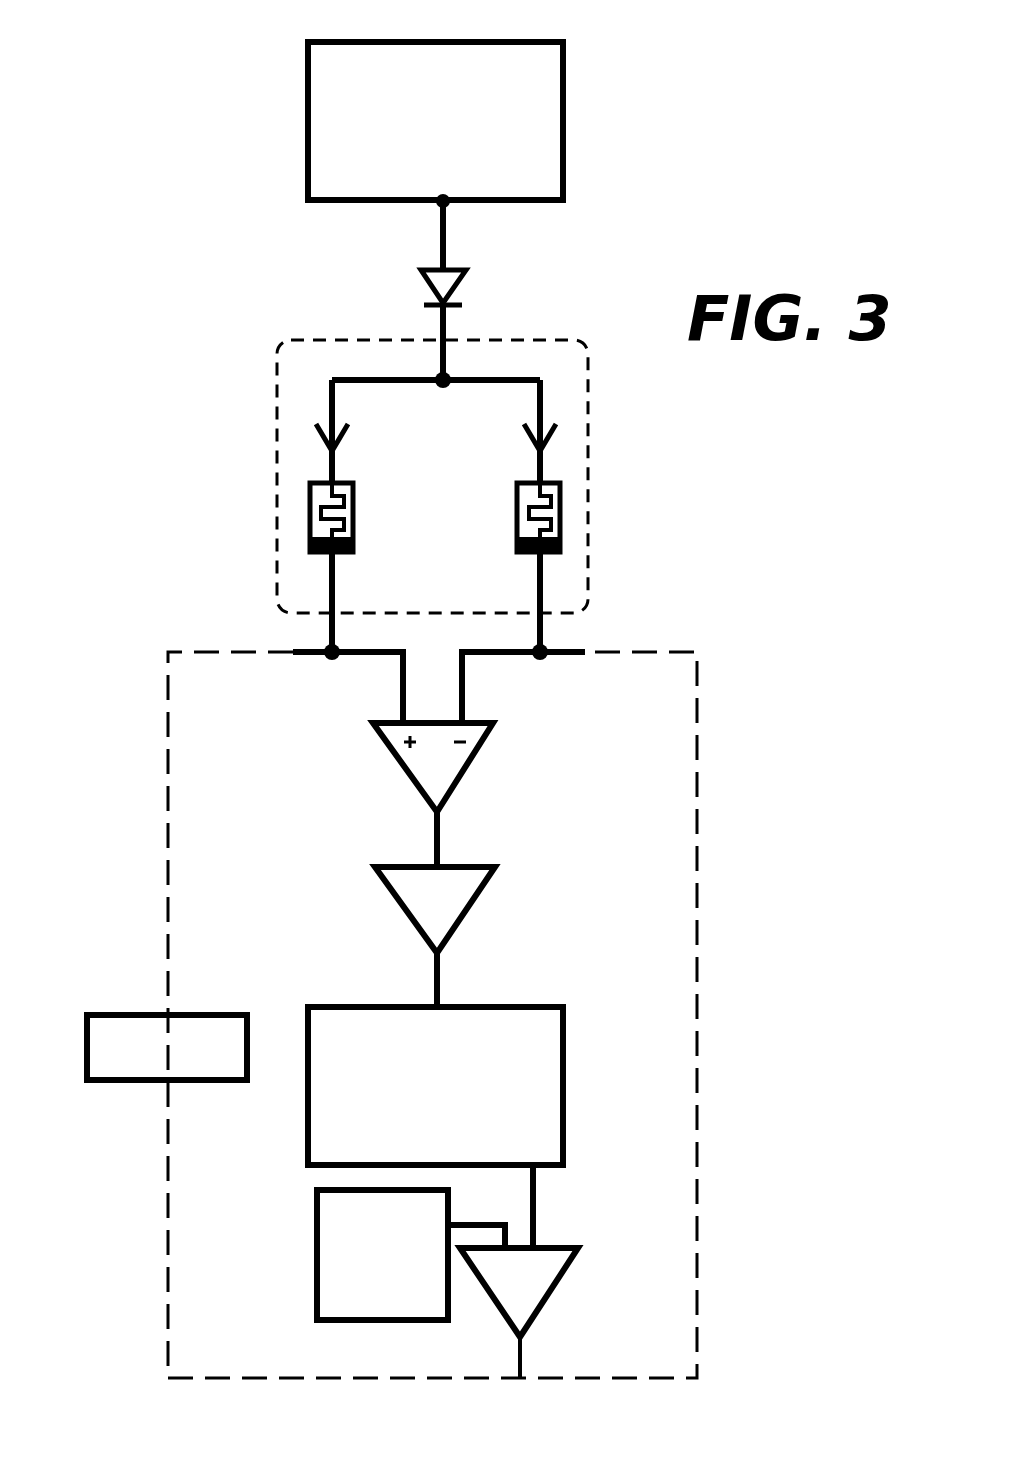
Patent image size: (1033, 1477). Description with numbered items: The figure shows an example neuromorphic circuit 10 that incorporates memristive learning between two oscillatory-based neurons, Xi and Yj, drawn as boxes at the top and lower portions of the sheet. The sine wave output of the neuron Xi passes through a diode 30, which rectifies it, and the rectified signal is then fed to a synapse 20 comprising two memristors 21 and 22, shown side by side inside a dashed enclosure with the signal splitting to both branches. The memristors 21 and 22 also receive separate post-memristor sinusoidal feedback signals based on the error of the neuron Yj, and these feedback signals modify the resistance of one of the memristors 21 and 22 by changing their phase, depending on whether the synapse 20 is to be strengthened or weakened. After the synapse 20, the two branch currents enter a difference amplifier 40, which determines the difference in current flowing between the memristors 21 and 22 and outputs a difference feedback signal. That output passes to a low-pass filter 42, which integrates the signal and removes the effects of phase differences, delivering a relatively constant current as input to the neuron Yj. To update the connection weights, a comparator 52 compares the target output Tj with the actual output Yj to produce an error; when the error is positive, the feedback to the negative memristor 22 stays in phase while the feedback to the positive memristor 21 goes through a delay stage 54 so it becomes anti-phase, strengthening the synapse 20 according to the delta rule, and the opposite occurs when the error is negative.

The neuromorphic circuit 10 is at (168, 84).
The synapse 20 is at (306, 341).
The memristor 21 is at (356, 498).
The memristor 22 is at (516, 529).
The diode 30 is at (448, 276).
The difference amplifier 40 is at (447, 758).
The low-pass filter 42 is at (447, 902).
The comparator 52 is at (531, 1315).
The delay stage 54 is at (105, 1070).